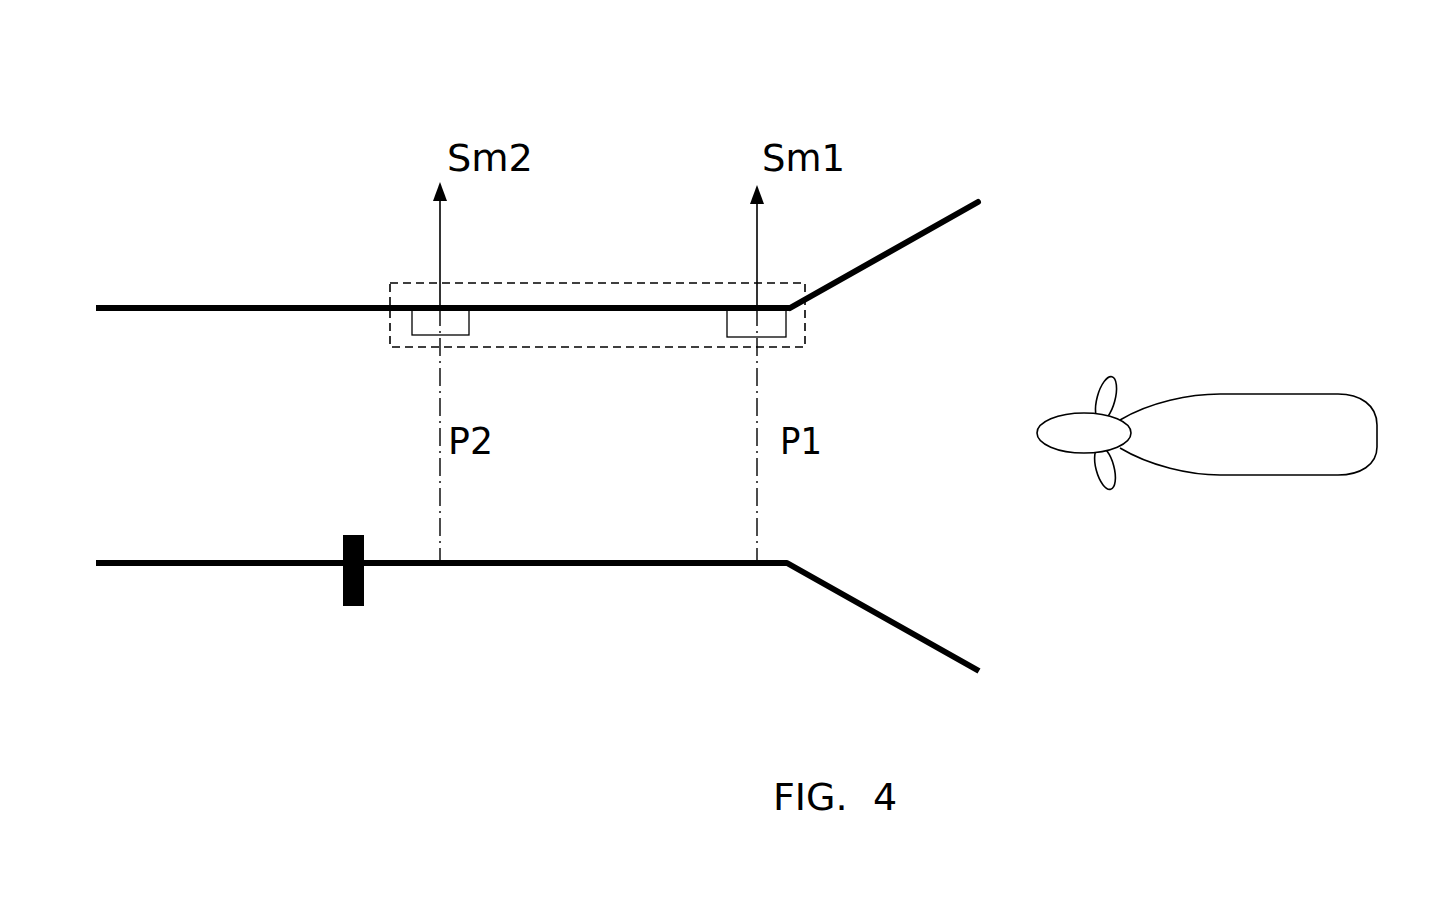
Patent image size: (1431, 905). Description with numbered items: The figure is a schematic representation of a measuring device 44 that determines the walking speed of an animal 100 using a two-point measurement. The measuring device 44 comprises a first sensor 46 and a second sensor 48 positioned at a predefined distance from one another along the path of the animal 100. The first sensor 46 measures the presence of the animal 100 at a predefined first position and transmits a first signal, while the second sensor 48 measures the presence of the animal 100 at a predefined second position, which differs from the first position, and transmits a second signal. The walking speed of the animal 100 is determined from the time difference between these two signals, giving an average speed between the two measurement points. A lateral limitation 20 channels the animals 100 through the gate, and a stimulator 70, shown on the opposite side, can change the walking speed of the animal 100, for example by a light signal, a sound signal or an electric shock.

The lateral limitation 20 is at (910, 224).
The measuring device 44 is at (390, 298).
The first sensor 46 is at (774, 326).
The second sensor 48 is at (459, 326).
The stimulator 70 is at (343, 587).
The animal 100 is at (1244, 388).